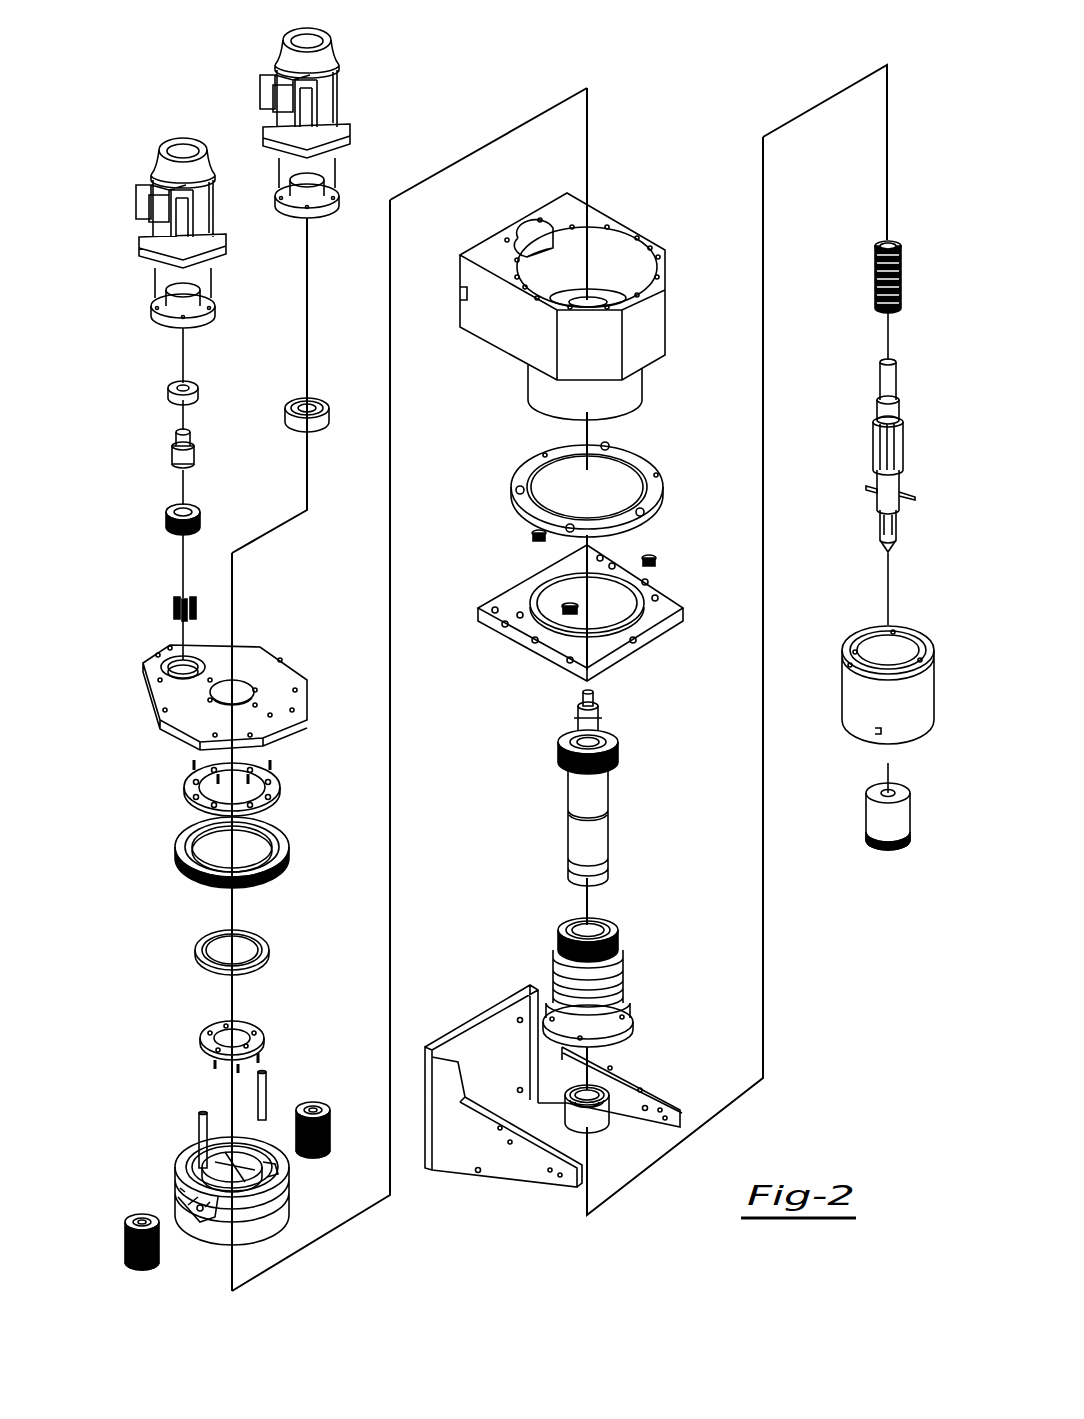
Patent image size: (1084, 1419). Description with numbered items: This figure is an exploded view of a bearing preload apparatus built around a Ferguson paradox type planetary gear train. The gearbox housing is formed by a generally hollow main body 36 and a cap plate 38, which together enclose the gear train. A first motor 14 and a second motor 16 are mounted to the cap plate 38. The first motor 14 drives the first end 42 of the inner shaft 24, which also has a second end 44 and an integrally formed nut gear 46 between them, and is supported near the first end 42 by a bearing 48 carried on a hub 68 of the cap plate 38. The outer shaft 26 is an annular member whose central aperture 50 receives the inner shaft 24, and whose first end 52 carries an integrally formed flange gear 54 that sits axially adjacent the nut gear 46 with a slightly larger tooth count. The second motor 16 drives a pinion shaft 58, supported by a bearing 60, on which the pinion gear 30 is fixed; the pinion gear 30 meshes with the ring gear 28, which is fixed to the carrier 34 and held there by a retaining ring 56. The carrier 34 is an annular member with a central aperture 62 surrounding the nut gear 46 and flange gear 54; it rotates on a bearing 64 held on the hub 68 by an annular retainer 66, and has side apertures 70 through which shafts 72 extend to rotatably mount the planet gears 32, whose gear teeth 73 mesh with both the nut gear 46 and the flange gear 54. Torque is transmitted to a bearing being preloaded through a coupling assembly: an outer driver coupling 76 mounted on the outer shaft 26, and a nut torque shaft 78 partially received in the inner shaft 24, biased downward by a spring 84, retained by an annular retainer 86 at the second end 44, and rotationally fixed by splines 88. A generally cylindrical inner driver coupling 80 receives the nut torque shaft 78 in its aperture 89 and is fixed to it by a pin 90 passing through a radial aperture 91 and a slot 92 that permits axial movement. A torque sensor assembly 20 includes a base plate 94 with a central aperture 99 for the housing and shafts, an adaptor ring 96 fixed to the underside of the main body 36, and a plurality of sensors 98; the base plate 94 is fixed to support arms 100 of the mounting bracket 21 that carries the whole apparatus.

The first motor 14 is at (280, 42).
The second motor 16 is at (156, 140).
The torque sensor assembly 20 is at (493, 533).
The mounting bracket 21 is at (498, 1192).
The inner shaft 24 is at (533, 733).
The outer shaft 26 is at (637, 973).
The ring gear 28 is at (178, 860).
The pinion gear 30 is at (166, 518).
The planet gears 32 is at (326, 1112).
The carrier 34 is at (218, 1230).
The main body 36 is at (625, 230).
The cap plate 38 is at (168, 695).
The first end 42 is at (596, 696).
The second end 44 is at (608, 865).
The nut gear 46 is at (620, 748).
The bearing 48 is at (325, 420).
The central aperture 50 is at (600, 920).
The first end 52 is at (568, 915).
The flange gear 54 is at (560, 930).
The retaining ring 56 is at (190, 784).
The pinion shaft 58 is at (172, 458).
The bearing 60 is at (168, 392).
The central aperture 62 is at (232, 1160).
The bearing 64 is at (195, 950).
The annular retainer 66 is at (210, 1028).
The hub 68 is at (237, 680).
The side apertures 70 is at (198, 1200).
The shafts 72 is at (264, 1074).
The gear teeth 73 is at (330, 1138).
The outer driver coupling 76 is at (856, 700).
The nut torque shaft 78 is at (877, 475).
The inner driver coupling 80 is at (897, 833).
The spring 84 is at (902, 268).
The annular retainer 86 is at (572, 1100).
The splines 88 is at (898, 436).
The aperture 89 is at (893, 790).
The pin 90 is at (866, 492).
The aperture 91 is at (910, 800).
The slot 92 is at (902, 494).
The base plate 94 is at (498, 612).
The adaptor ring 96 is at (643, 460).
The sensors 98 is at (565, 606).
The central aperture 99 is at (612, 620).
The support arms 100 is at (645, 1108).